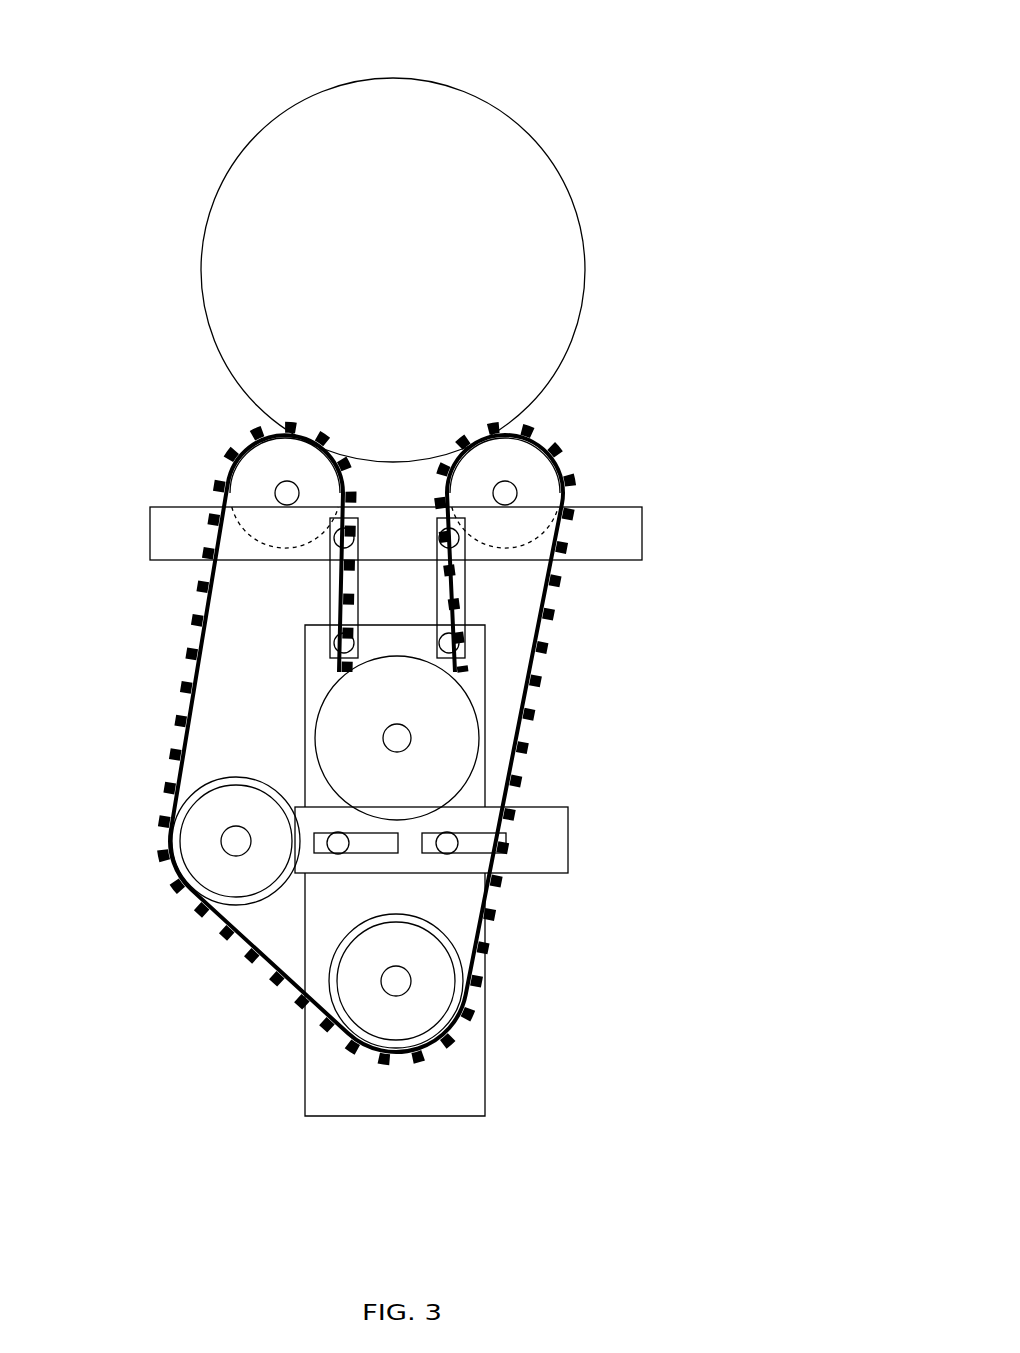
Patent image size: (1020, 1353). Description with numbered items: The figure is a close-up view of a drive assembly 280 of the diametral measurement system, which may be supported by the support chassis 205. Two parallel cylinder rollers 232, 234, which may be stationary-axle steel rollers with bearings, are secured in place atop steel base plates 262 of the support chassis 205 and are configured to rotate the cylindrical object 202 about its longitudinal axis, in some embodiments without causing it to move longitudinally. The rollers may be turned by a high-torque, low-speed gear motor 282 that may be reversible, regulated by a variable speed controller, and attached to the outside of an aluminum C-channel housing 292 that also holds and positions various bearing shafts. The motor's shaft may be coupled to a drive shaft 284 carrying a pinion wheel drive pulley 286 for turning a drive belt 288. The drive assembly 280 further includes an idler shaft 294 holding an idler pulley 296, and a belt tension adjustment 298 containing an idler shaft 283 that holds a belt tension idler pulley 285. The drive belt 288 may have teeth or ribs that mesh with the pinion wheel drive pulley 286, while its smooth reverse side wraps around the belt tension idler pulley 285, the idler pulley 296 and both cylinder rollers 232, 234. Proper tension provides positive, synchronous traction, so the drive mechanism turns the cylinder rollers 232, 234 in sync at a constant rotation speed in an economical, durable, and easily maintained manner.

The cylindrical object 202 is at (409, 281).
The support chassis 205 is at (674, 527).
The cylinder roller 232 is at (265, 467).
The cylinder roller 234 is at (528, 462).
The steel base plate 262 is at (188, 527).
The drive assembly 280 is at (664, 60).
The gear motor 282 is at (500, 675).
The idler shaft 283 is at (235, 842).
The drive shaft 284 is at (395, 738).
The belt tension idler pulley 285 is at (237, 803).
The pinion wheel drive pulley 286 is at (445, 716).
The drive belt 288 is at (200, 686).
The C-channel housing 292 is at (465, 1050).
The idler shaft 294 is at (395, 979).
The idler pulley 296 is at (395, 1017).
The belt tension adjustment 298 is at (547, 840).